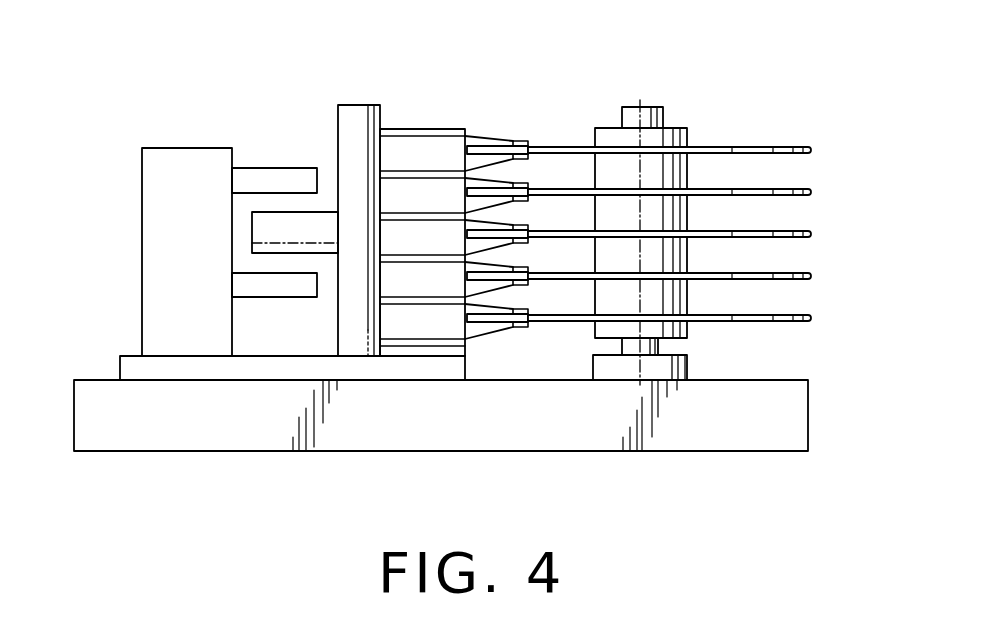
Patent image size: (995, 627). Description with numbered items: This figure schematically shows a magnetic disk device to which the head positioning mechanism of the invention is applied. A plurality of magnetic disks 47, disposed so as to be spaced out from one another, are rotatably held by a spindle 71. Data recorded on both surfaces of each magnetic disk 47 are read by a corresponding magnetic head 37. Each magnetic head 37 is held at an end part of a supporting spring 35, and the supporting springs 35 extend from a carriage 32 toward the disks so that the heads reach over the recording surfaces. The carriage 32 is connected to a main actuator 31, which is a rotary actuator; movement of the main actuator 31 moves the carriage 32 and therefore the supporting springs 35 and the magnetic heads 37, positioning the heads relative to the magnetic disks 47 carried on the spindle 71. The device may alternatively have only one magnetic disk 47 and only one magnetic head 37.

The main actuator 31 is at (295, 223).
The carriage 32 is at (418, 128).
The supporting spring 35 is at (490, 137).
The magnetic head 37 is at (530, 141).
The magnetic disk 47 is at (767, 147).
The spindle 71 is at (653, 107).